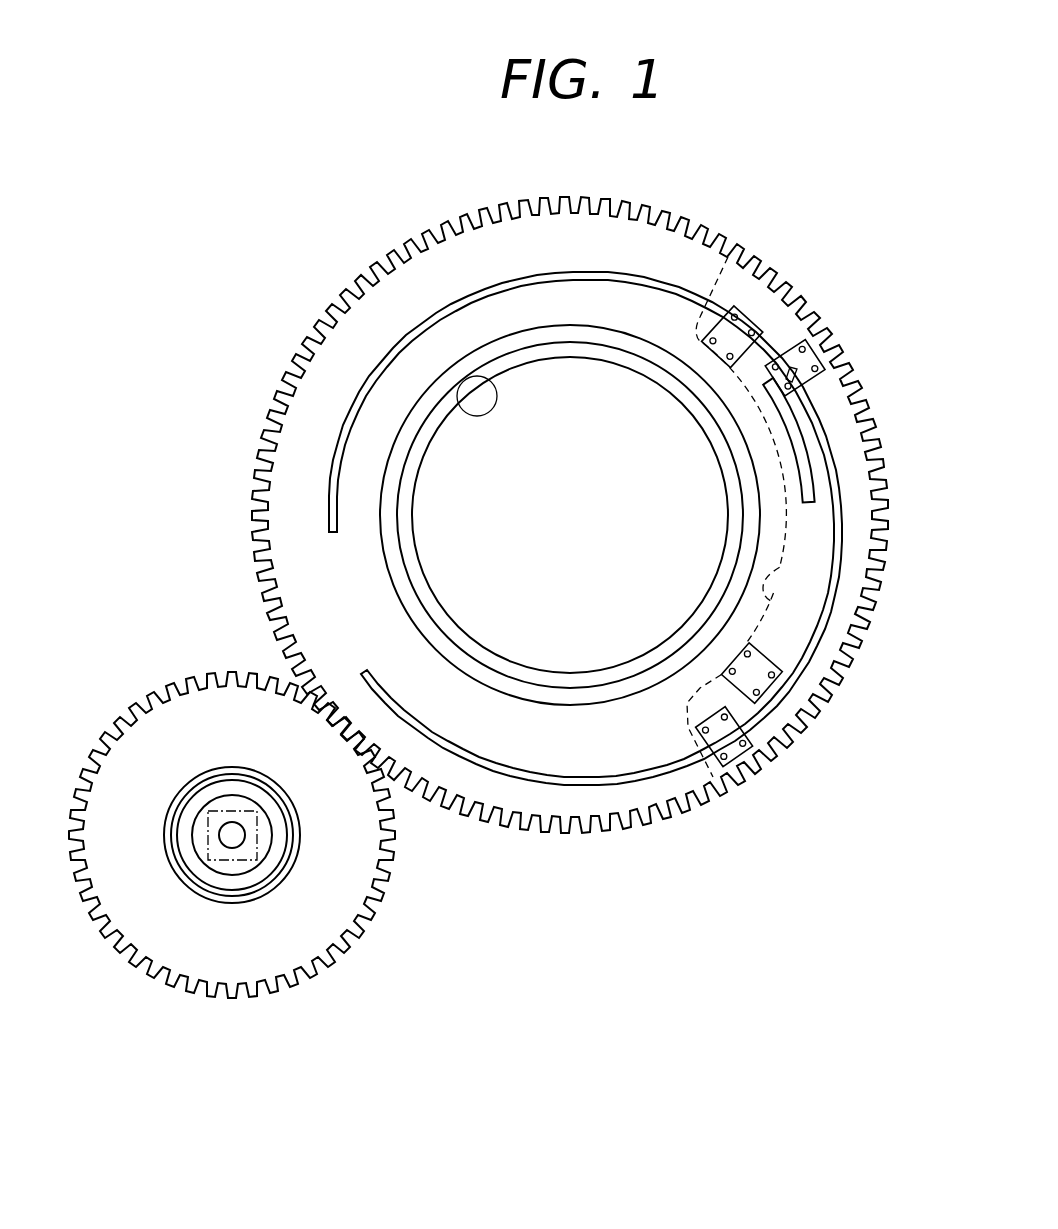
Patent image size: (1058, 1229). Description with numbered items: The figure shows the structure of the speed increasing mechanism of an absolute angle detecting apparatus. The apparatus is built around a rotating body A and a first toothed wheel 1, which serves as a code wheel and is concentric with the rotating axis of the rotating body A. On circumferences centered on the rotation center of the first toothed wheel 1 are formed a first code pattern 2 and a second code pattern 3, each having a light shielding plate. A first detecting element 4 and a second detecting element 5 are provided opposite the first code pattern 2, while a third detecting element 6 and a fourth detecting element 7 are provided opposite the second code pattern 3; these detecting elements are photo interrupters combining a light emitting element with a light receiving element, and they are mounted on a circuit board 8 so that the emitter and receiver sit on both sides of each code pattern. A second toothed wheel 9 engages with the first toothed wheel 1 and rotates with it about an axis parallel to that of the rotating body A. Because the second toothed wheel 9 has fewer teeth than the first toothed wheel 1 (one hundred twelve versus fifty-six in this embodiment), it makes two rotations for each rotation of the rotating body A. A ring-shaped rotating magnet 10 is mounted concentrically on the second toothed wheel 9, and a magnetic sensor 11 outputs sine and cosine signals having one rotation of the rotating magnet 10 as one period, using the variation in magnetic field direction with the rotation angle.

The first toothed wheel 1 is at (587, 802).
The first code pattern 2 is at (807, 463).
The second code pattern 3 is at (643, 773).
The first detecting element 4 is at (745, 320).
The second detecting element 5 is at (767, 683).
The third detecting element 6 is at (823, 338).
The fourth detecting element 7 is at (733, 750).
The circuit board 8 is at (775, 602).
The second toothed wheel 9 is at (310, 937).
The rotating magnet 10 is at (207, 878).
The magnetic sensor 11 is at (260, 830).
The rotating body A is at (457, 395).